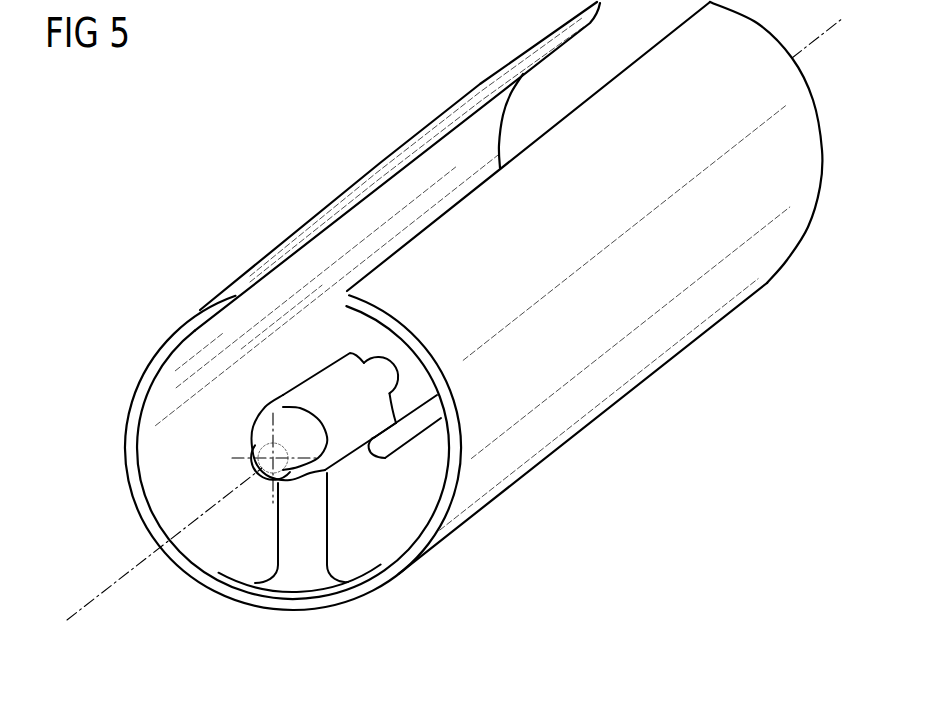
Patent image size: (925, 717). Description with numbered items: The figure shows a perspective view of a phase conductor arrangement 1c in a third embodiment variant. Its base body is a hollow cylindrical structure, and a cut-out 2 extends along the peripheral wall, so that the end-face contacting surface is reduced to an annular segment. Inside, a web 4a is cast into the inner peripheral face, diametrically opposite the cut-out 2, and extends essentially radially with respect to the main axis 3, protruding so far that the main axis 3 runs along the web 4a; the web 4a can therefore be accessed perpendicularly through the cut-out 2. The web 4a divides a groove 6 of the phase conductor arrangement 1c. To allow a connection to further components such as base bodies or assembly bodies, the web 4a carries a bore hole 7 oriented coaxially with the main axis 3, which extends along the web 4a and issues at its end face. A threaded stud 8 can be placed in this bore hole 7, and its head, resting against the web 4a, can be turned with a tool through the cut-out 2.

The phase conductor arrangement 1c is at (462, 440).
The cut-out 2 is at (343, 298).
The main axis 3 is at (78, 608).
The web 4a is at (327, 537).
The groove 6 is at (249, 528).
The bore hole 7 is at (283, 396).
The threaded stud 8 is at (327, 478).